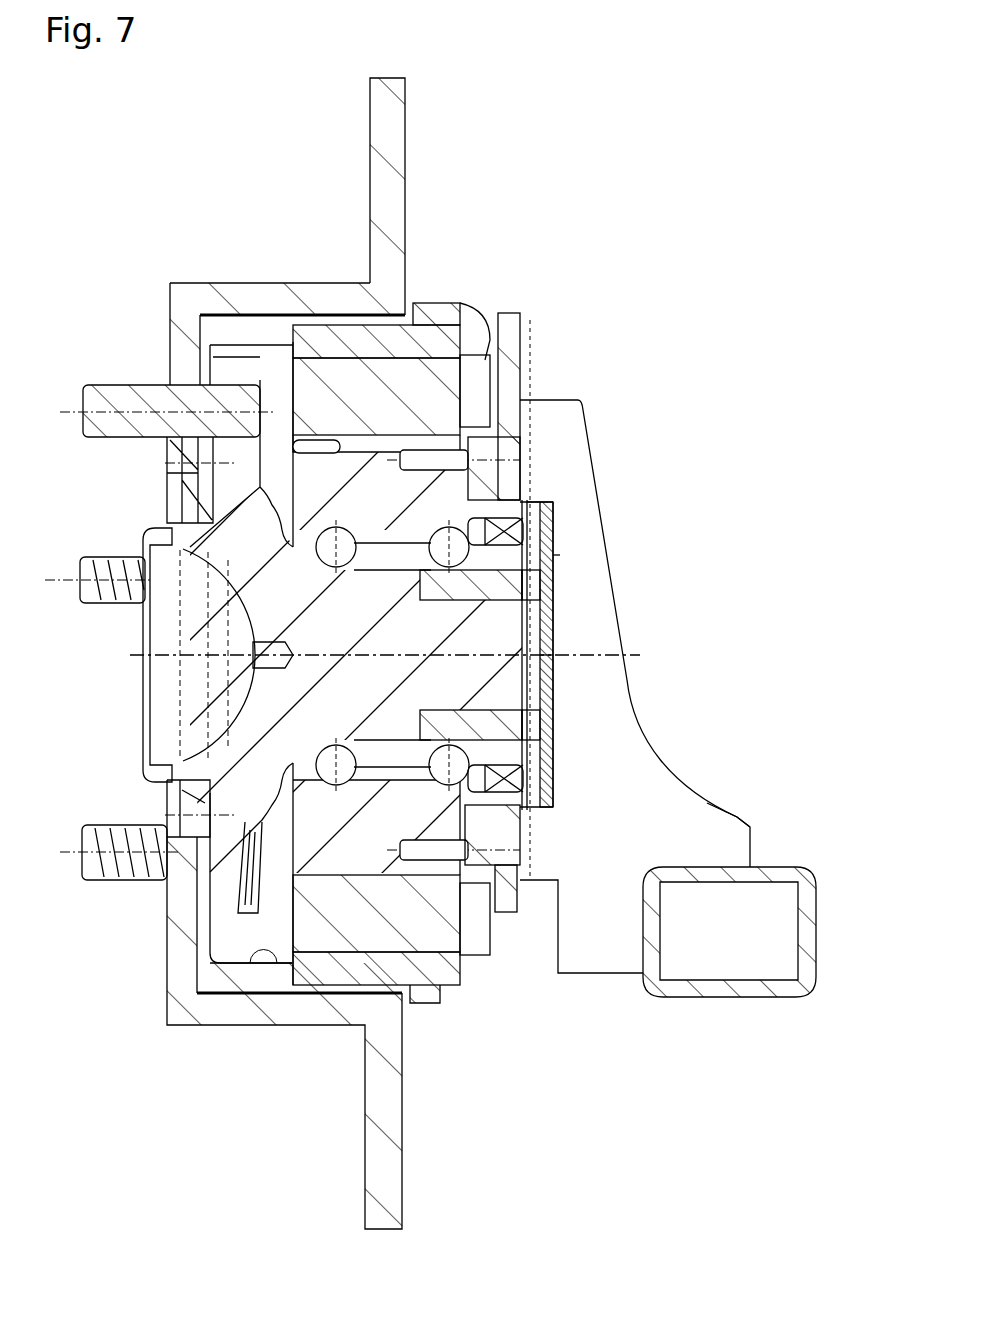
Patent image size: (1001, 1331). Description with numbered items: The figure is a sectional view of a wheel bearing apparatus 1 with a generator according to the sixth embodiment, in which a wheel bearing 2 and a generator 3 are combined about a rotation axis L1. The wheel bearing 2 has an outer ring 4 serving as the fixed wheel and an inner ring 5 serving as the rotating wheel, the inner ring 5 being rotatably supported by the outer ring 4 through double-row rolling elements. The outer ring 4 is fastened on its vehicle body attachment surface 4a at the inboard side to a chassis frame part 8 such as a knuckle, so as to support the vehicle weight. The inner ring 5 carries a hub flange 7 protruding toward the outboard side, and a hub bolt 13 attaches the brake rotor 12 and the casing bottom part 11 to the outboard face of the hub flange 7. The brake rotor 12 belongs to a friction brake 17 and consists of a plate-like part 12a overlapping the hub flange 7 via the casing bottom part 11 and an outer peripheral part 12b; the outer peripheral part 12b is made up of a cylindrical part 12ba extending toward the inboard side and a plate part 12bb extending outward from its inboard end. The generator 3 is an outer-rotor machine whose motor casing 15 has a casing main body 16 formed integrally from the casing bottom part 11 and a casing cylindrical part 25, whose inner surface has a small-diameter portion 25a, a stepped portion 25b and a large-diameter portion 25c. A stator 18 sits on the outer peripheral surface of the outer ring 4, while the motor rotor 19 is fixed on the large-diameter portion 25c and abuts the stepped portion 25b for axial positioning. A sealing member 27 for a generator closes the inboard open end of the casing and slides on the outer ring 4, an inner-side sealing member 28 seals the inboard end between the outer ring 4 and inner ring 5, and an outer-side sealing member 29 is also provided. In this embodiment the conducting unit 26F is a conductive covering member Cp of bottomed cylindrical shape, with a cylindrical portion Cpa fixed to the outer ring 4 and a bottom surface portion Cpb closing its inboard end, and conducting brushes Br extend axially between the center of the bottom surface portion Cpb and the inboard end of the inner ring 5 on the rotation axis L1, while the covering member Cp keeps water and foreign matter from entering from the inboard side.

The wheel bearing apparatus with a generator 1 is at (93, 201).
The wheel bearing 2 is at (122, 642).
The generator 3 is at (465, 592).
The outer ring 4 is at (632, 686).
The vehicle body attachment surface 4a is at (735, 815).
The inner ring 5 is at (270, 625).
The hub flange 7 is at (165, 463).
The chassis frame part 8 is at (604, 965).
The casing bottom part 11 is at (195, 920).
The brake rotor 12 is at (258, 535).
The plate-like part 12a is at (178, 350).
The outer peripheral part 12b is at (287, 535).
The cylindrical part 12ba is at (297, 298).
The plate part 12bb is at (382, 168).
The hub bolt 13 is at (107, 403).
The motor casing 15 is at (425, 303).
The casing main body 16 is at (500, 665).
The brake 17 is at (427, 1078).
The stator 18 is at (440, 395).
The motor rotor 19 is at (500, 322).
The casing cylindrical part 25 is at (307, 710).
The small-diameter portion 25a is at (280, 985).
The stepped portion 25b is at (330, 990).
The large-diameter portion 25c is at (415, 998).
The conducting unit 26F is at (573, 727).
The sealing member for a generator 27 is at (473, 972).
The inner-side sealing member 28 is at (536, 786).
The outer-side sealing member 29 is at (320, 548).
The conductive covering member Cp is at (631, 529).
The cylindrical portion Cpa is at (545, 500).
The bottom surface portion Cpb is at (553, 555).
The rotation axis L1 is at (558, 618).
The conducting brushes Br is at (553, 655).